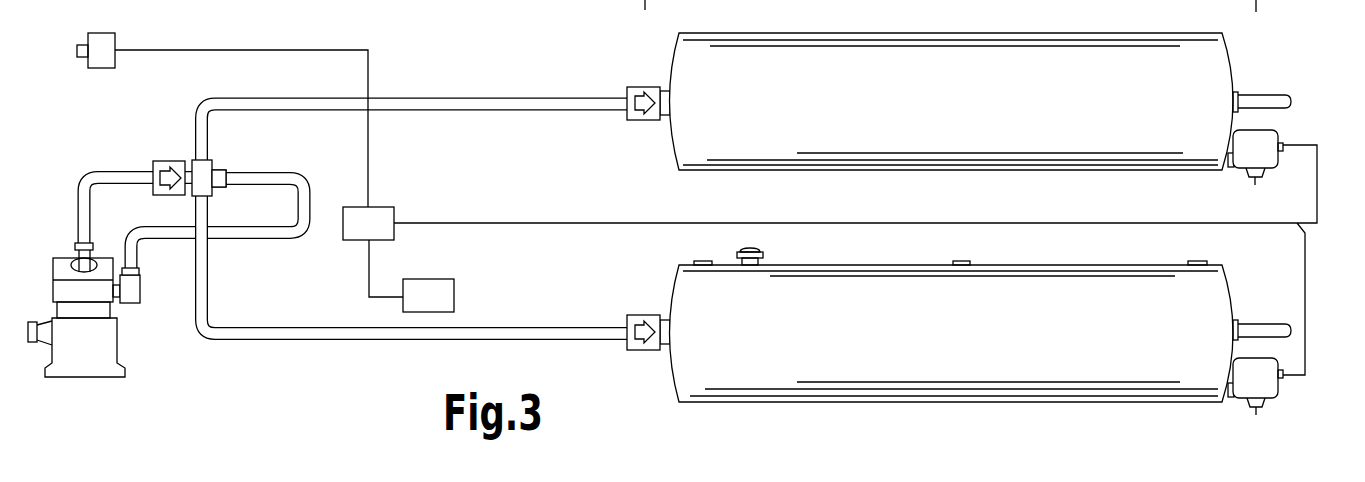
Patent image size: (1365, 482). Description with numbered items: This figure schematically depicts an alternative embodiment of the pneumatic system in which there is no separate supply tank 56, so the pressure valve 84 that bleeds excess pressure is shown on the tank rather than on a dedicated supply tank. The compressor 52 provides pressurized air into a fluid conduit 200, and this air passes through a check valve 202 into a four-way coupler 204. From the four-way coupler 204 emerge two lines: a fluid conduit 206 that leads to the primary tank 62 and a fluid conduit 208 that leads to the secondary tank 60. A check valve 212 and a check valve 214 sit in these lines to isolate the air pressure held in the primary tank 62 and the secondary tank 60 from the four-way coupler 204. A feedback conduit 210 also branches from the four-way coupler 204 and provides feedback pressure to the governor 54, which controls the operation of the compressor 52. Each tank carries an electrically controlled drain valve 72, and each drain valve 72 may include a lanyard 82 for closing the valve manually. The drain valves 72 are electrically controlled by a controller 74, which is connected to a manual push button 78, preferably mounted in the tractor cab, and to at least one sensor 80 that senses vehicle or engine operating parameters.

The compressor 52 is at (103, 378).
The governor 54 is at (141, 288).
The supply tank 56 is at (800, 0).
The secondary tank 60 is at (1073, 0).
The primary tank 62 is at (975, 170).
The drain valve 72 is at (1272, 130).
The controller 74 is at (382, 207).
The push button 78 is at (106, 33).
The sensor 80 is at (454, 291).
The lanyard 82 is at (643, 10).
The pressure valve 84 is at (735, 250).
The fluid conduit 200 is at (77, 203).
The check valve 202 is at (164, 161).
The four-way coupler 204 is at (213, 162).
The fluid conduit 206 is at (448, 97).
The fluid conduit 208 is at (372, 342).
The feedback conduit 210 is at (262, 240).
The check valve 212 is at (643, 120).
The check valve 214 is at (645, 350).